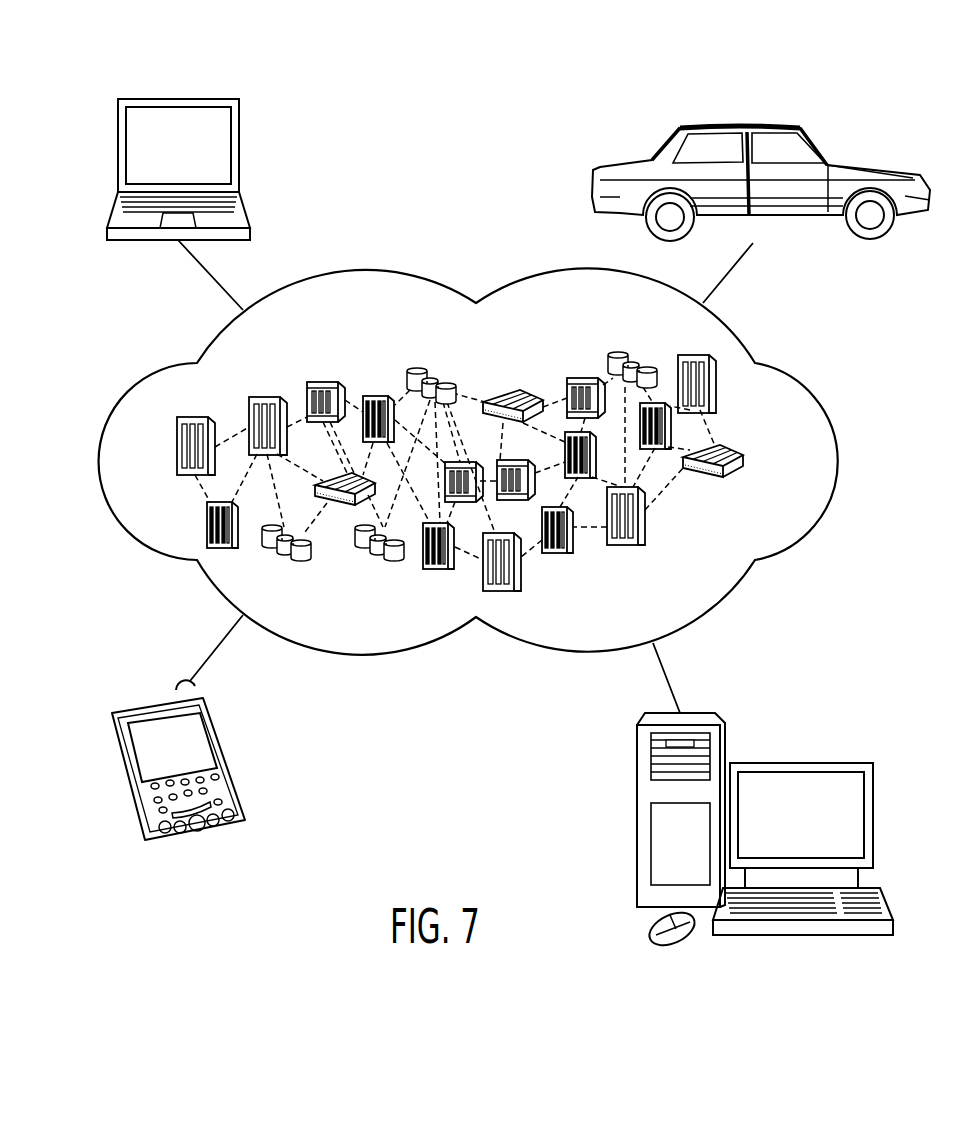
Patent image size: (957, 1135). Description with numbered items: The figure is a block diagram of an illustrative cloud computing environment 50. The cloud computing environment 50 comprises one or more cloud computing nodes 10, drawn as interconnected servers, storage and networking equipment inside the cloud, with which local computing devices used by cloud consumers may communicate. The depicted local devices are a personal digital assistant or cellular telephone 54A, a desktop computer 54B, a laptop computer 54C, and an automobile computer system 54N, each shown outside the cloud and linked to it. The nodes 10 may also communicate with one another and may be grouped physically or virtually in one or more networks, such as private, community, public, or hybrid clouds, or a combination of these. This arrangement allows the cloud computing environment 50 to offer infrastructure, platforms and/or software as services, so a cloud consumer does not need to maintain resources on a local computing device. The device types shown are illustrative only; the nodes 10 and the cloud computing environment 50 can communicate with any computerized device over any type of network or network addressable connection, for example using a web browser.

The cloud computing environment 50 is at (817, 368).
The cloud computing node 10 is at (752, 460).
The personal digital assistant or cellular telephone 54A is at (158, 700).
The desktop computer 54B is at (802, 760).
The laptop computer 54C is at (178, 99).
The automobile computer system 54N is at (738, 127).